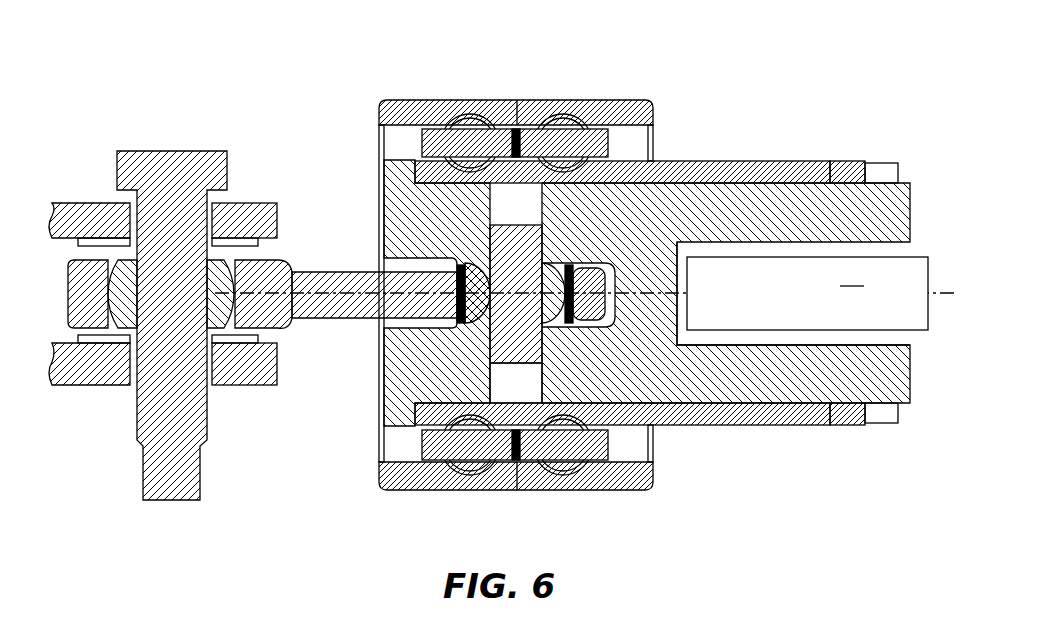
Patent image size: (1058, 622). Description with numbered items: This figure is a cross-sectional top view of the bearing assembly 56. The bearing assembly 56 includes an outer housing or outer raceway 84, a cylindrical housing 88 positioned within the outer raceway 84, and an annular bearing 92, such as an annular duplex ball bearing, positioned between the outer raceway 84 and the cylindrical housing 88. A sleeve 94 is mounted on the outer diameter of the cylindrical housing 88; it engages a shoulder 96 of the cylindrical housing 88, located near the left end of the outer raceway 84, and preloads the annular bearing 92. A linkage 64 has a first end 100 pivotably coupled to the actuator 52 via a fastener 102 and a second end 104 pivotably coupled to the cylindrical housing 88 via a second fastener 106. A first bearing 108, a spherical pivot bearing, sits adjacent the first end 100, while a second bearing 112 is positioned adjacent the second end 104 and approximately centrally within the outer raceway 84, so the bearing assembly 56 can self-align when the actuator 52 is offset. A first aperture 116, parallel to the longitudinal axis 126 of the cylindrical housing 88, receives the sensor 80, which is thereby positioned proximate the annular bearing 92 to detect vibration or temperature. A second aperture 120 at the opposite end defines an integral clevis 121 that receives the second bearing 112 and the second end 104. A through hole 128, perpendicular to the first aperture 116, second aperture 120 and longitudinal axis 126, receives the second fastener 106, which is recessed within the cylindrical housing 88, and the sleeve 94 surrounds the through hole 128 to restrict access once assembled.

The actuator 52 is at (92, 222).
The bearing assembly 56 is at (663, 64).
The linkage 64 is at (305, 272).
The sensor 80 is at (807, 293).
The outer raceway 84 is at (452, 100).
The cylindrical housing 88 is at (883, 188).
The annular bearing 92 is at (566, 120).
The sleeve 94 is at (752, 163).
The shoulder 96 is at (428, 175).
The first end 100 is at (68, 275).
The fastener 102 is at (175, 162).
The second end 104 is at (617, 308).
The second fastener 106 is at (517, 350).
The first bearing 108 is at (232, 262).
The second bearing 112 is at (456, 300).
The first aperture 116 is at (764, 345).
The second aperture 120 is at (612, 277).
The integral clevis 121 is at (573, 327).
The longitudinal axis 126 is at (946, 293).
The through hole 128 is at (492, 372).